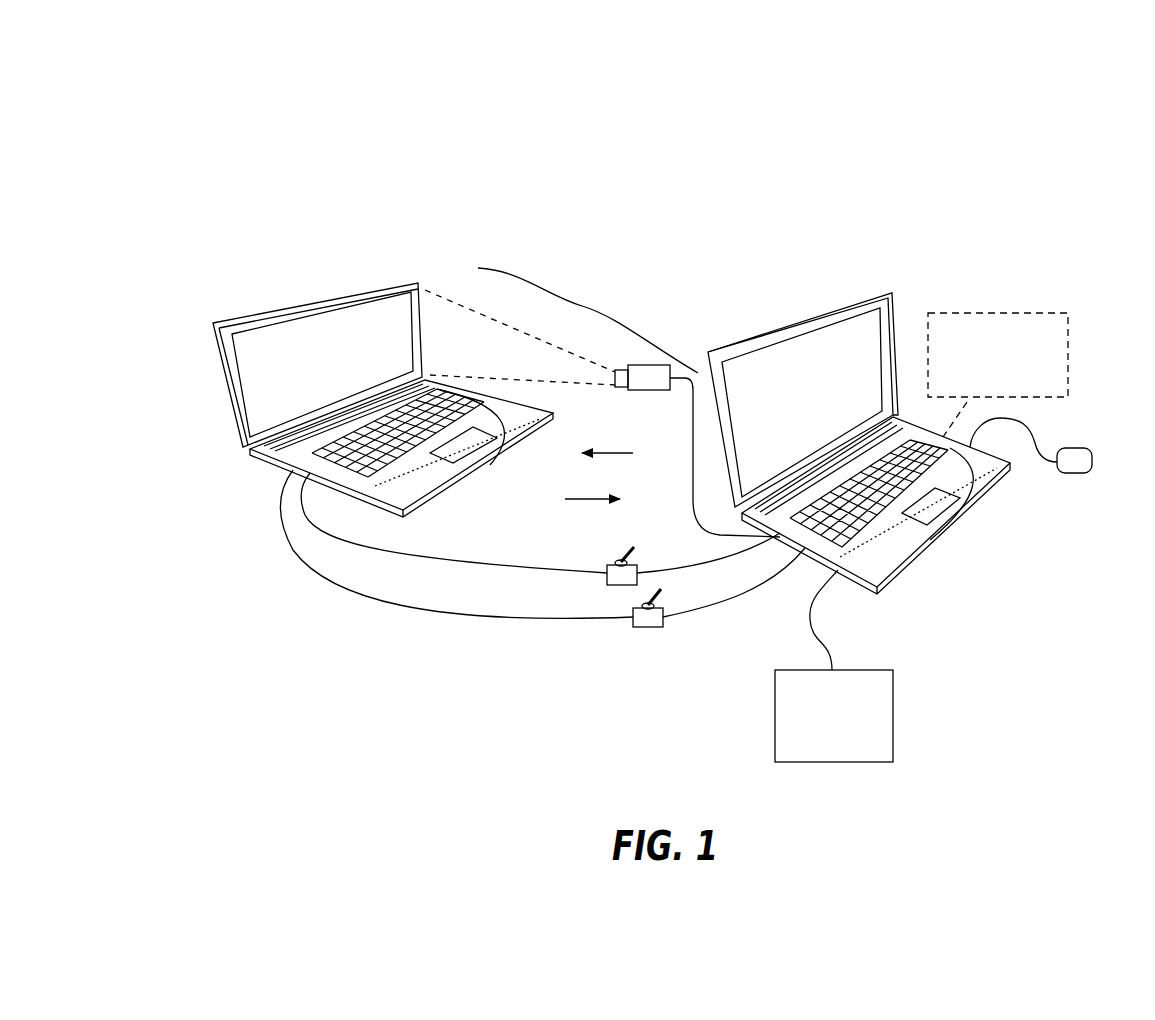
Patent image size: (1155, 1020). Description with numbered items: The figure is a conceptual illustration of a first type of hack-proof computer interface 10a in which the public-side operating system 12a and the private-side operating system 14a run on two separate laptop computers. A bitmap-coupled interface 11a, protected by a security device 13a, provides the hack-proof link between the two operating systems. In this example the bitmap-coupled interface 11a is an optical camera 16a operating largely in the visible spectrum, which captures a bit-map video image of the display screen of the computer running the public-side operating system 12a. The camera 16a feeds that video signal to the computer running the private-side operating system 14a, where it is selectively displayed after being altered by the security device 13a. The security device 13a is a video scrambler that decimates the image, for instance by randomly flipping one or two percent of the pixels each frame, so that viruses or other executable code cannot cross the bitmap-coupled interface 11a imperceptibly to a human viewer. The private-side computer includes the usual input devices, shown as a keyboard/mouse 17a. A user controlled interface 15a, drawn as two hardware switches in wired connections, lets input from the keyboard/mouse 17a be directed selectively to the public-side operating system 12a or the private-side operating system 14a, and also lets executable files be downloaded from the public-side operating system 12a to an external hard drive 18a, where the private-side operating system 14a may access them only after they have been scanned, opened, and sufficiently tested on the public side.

The hack-proof computer interface 10a is at (968, 165).
The bitmap-coupled interface 11a is at (600, 302).
The public-side operating system 12a is at (300, 283).
The security device 13a is at (1035, 313).
The private-side operating system 14a is at (932, 597).
The user controlled interface 15a is at (563, 637).
The camera 16a is at (655, 377).
The keyboard/mouse 17a is at (1062, 488).
The external hard drive 18a is at (834, 666).